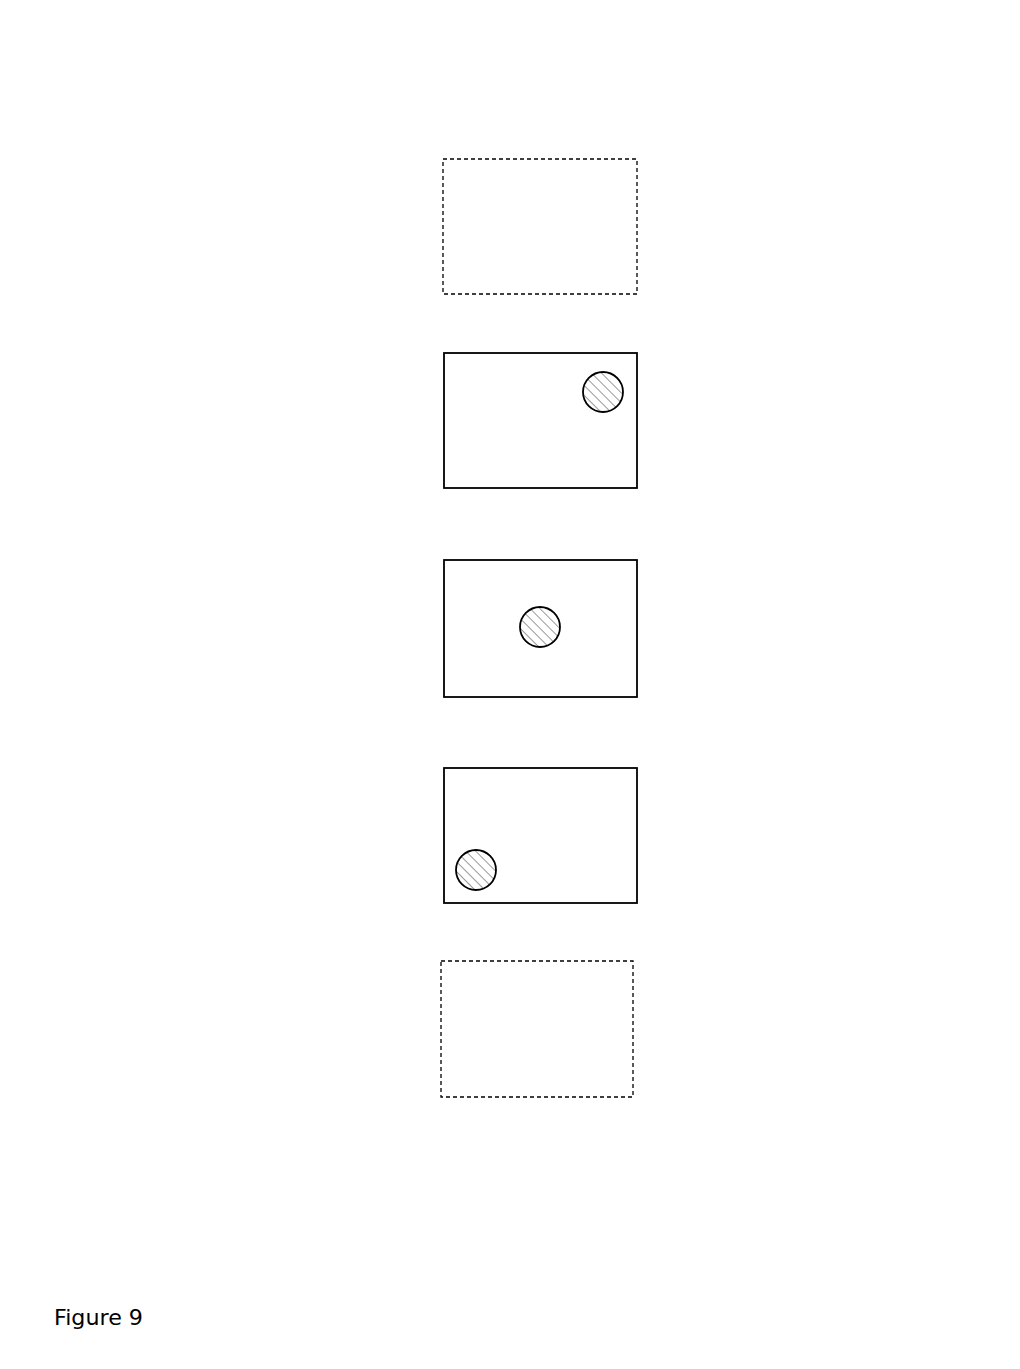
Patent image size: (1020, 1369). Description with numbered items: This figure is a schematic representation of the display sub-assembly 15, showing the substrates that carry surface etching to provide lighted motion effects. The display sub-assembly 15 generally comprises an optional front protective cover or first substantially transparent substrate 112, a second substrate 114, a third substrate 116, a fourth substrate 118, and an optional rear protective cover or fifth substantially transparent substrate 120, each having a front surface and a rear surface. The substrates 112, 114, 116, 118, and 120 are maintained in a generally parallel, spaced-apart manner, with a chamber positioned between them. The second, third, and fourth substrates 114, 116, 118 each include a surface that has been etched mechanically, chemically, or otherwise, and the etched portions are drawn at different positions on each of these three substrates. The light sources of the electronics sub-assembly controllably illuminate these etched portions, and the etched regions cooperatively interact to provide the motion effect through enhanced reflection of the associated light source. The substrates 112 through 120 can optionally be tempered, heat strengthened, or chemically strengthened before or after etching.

The display sub-assembly 15 is at (733, 82).
The first substantially transparent substrate 112 is at (418, 1030).
The second substrate 114 is at (668, 835).
The third substrate 116 is at (425, 628).
The fourth substrate 118 is at (420, 427).
The fifth substantially transparent substrate 120 is at (423, 227).